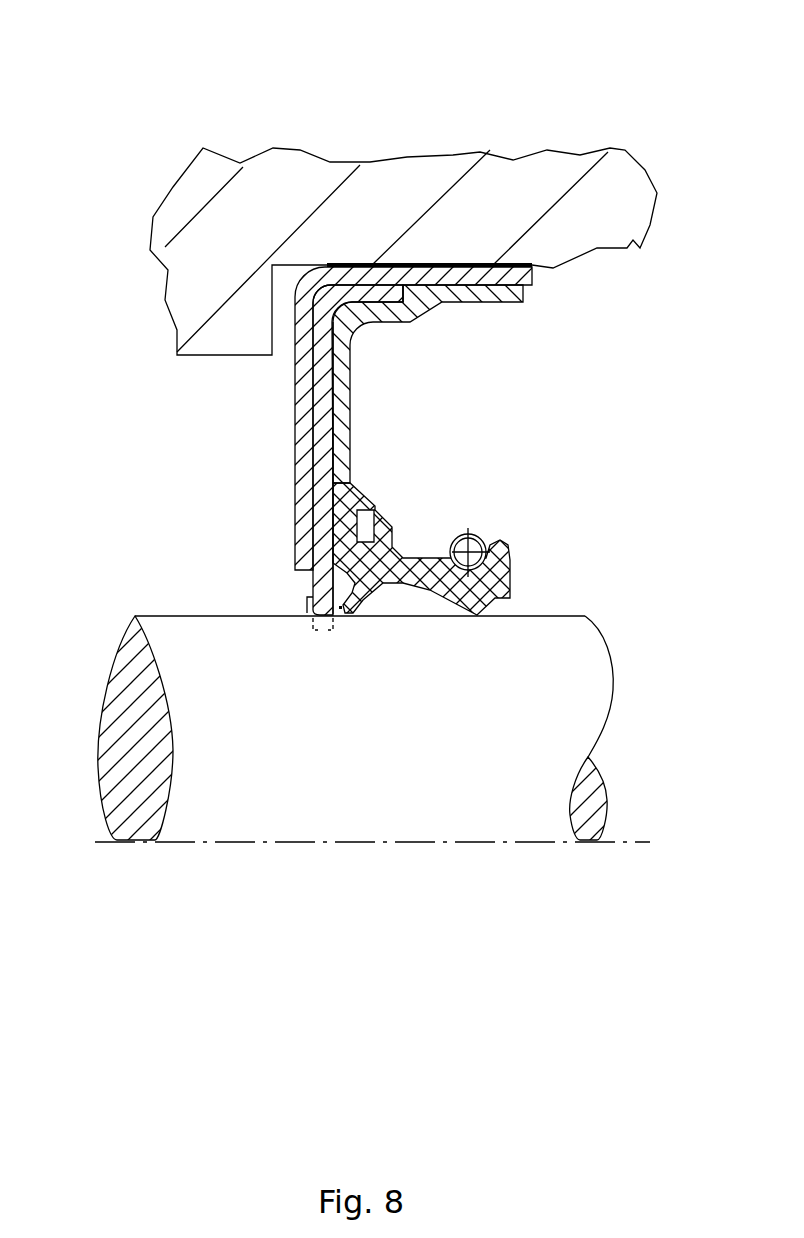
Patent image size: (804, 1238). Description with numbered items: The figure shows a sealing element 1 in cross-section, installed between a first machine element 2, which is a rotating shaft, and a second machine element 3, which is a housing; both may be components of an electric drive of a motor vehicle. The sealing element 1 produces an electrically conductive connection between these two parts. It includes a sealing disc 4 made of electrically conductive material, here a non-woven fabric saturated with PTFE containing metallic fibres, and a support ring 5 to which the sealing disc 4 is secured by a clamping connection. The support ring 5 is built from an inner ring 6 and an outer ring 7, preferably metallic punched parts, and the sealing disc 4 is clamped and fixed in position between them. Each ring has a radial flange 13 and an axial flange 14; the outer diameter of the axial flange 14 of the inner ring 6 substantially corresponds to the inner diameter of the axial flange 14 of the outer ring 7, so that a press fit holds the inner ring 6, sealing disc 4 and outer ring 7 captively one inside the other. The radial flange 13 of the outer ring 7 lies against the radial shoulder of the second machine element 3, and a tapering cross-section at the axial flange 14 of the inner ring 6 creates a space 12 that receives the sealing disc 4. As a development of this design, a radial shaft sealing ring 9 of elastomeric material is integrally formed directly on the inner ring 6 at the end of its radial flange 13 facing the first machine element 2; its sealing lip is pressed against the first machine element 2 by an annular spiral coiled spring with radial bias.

The sealing element 1 is at (415, 337).
The first machine element 2 is at (520, 705).
The second machine element 3 is at (595, 218).
The sealing disc 4 is at (308, 607).
The support ring 5 is at (343, 415).
The inner ring 6 is at (342, 345).
The outer ring 7 is at (297, 478).
The radial shaft sealing ring 9 is at (500, 598).
The space 12 is at (410, 292).
The radial flange 13 is at (300, 368).
The axial flange 14 is at (468, 277).